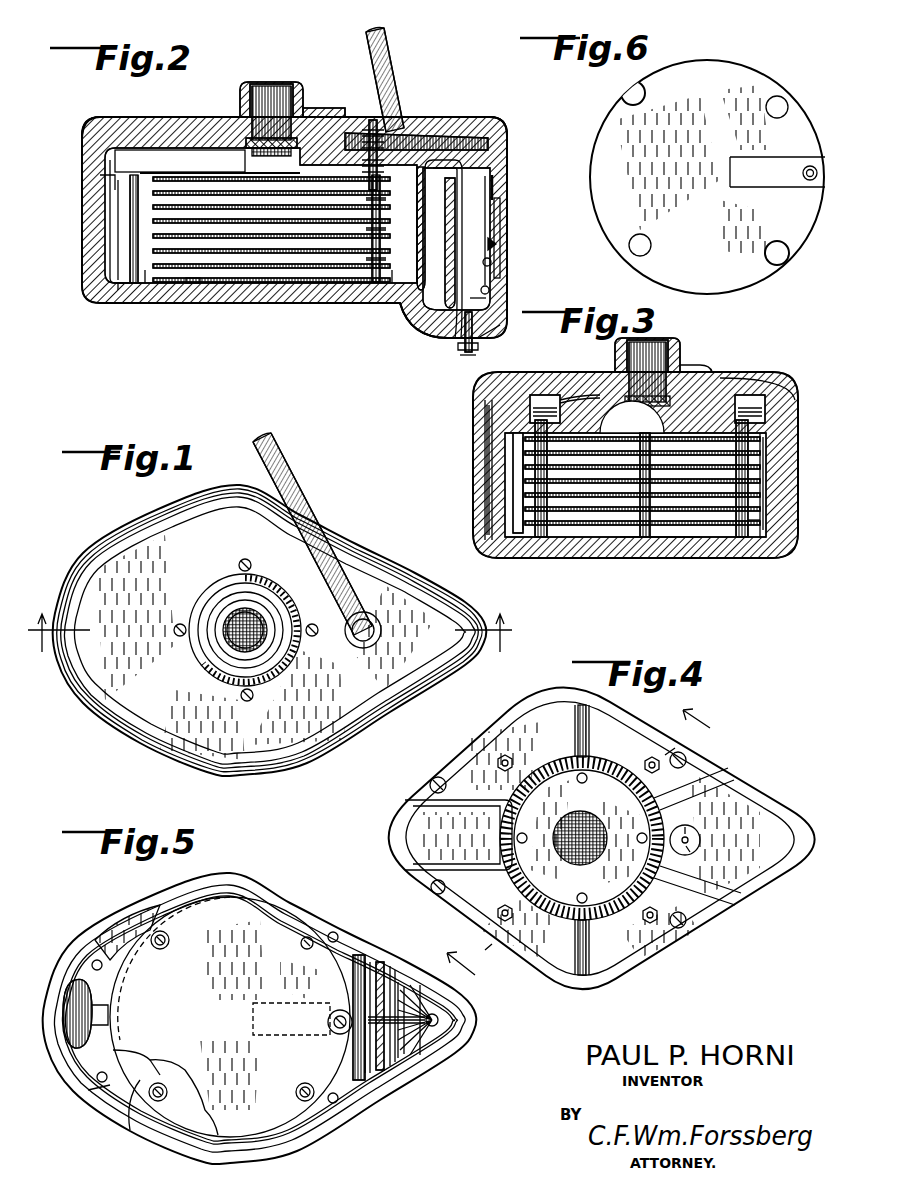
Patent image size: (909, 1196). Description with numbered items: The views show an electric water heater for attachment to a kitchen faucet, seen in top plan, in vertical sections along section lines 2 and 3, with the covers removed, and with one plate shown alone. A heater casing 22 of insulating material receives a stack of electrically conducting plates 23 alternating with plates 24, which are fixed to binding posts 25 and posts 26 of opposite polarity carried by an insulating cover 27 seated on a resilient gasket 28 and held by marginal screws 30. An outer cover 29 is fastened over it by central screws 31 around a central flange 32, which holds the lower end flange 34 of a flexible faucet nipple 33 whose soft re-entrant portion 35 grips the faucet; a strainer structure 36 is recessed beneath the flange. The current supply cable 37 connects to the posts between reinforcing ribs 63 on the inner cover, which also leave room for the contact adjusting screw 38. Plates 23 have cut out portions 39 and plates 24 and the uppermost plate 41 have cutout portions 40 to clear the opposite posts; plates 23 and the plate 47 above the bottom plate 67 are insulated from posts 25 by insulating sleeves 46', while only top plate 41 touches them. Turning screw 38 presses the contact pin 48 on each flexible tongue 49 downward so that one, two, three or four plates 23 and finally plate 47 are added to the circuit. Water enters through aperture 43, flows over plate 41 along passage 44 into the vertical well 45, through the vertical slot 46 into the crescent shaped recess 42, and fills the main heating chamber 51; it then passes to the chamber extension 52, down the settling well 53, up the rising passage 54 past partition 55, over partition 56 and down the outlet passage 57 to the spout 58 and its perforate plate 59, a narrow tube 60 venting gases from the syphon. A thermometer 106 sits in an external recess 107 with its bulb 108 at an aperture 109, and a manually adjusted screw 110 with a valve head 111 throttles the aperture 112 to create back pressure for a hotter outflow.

In FIG. 1, the section line 2— 2 is at (271, 646).
In FIG. 4, the section line 3— 3 is at (585, 851).
In FIG. 2, the heater casing 22 is at (259, 309).
In FIG. 3, the heater casing 22 is at (752, 566).
In FIG. 4, the heater casing 22 is at (755, 916).
In FIG. 5, the heater casing 22 is at (266, 866).
In FIG. 2, the electrically conducting plates 23 is at (153, 222).
In FIG. 6, the electrically conducting plates 23 is at (606, 218).
In FIG. 3, the electrically conducting plates 23 is at (775, 482).
In FIG. 2, the alternate plates 24 is at (134, 238).
In FIG. 3, the alternate plates 24 is at (513, 484).
In FIG. 5, the alternate plates 24 is at (165, 1092).
In FIG. 3, the binding posts 25 is at (542, 395).
In FIG. 4, the binding posts 25 is at (650, 760).
In FIG. 5, the binding posts 25 is at (300, 943).
In FIG. 2, the binding posts 26 is at (192, 284).
In FIG. 3, the binding posts 26 is at (608, 540).
In FIG. 4, the binding posts 26 is at (512, 759).
In FIG. 5, the binding posts 26 is at (169, 940).
In FIG. 2, the insulating cover 27 is at (503, 156).
In FIG. 3, the insulating cover 27 is at (480, 416).
In FIG. 4, the insulating cover 27 is at (600, 839).
In FIG. 2, the resilient gasket 28 is at (104, 183).
In FIG. 5, the resilient gasket 28 is at (100, 945).
In FIG. 2, the outer cover 29 is at (100, 124).
In FIG. 3, the outer cover 29 is at (790, 392).
In FIG. 1, the outer cover 29 is at (322, 742).
In FIG. 4, the marginal screws 30 is at (434, 778).
In FIG. 5, the marginal screws 30 is at (338, 932).
In FIG. 1, the central screws 31 is at (247, 560).
In FIG. 1, the central flange 32 is at (272, 596).
In FIG. 2, the flexible faucet nipple 33 is at (244, 90).
In FIG. 3, the flexible faucet nipple 33 is at (681, 355).
In FIG. 1, the flexible faucet nipple 33 is at (236, 598).
In FIG. 2, the lower end flange 34 is at (318, 110).
In FIG. 3, the lower end flange 34 is at (708, 374).
In FIG. 2, the re-entrant portion 35 is at (272, 92).
In FIG. 3, the re-entrant portion 35 is at (657, 350).
In FIG. 2, the strainer structure 36 is at (271, 160).
In FIG. 1, the strainer structure 36 is at (238, 648).
In FIG. 4, the strainer structure 36 is at (598, 845).
In FIG. 2, the current supply cable 37 is at (392, 84).
In FIG. 1, the current supply cable 37 is at (308, 492).
In FIG. 2, the contact adjusting screw 38 is at (371, 120).
In FIG. 4, the contact adjusting screw 38 is at (700, 832).
In FIG. 5, the contact adjusting screw 38 is at (327, 1022).
In FIG. 6, the cut out portions 39 is at (633, 82).
In FIG. 5, the cutout portions 40 is at (150, 1115).
In FIG. 3, the uppermost plate 41 is at (486, 462).
In FIG. 4, the uppermost plate 41 is at (458, 835).
In FIG. 5, the uppermost plate 41 is at (230, 1017).
In FIG. 2, the crescent shaped recess 42 is at (150, 284).
In FIG. 3, the crescent shaped recess 42 is at (521, 540).
In FIG. 5, the crescent shaped recess 42 is at (108, 1090).
In FIG. 2, the aperture 43 is at (256, 150).
In FIG. 3, the aperture 43 is at (658, 406).
In FIG. 2, the passage 44 is at (180, 161).
In FIG. 3, the passage 44 is at (632, 417).
In FIG. 2, the vertical well 45 is at (118, 256).
In FIG. 5, the vertical well 45 is at (72, 1050).
In FIG. 2, the vertical slot 46 is at (112, 304).
In FIG. 5, the vertical slot 46 is at (121, 1011).
In FIG. 3, the insulating sleeves 46' is at (638, 486).
In FIG. 5, the insulating sleeves 46' is at (176, 1083).
In FIG. 3, the plate 47 is at (770, 522).
In FIG. 6, the contact pin 48 is at (808, 181).
In FIG. 6, the flexible tongue 49 is at (807, 165).
In FIG. 5, the flexible tongue 49 is at (268, 1036).
In FIG. 2, the main heating chamber 51 is at (142, 264).
In FIG. 3, the main heating chamber 51 is at (770, 455).
In FIG. 5, the main heating chamber 51 is at (268, 900).
In FIG. 2, the chamber extension 52 is at (382, 236).
In FIG. 5, the chamber extension 52 is at (350, 1066).
In FIG. 2, the settling well 53 is at (422, 318).
In FIG. 5, the settling well 53 is at (418, 1060).
In FIG. 2, the rising passage 54 is at (446, 240).
In FIG. 5, the rising passage 54 is at (400, 1058).
In FIG. 2, the partition 55 is at (446, 290).
In FIG. 5, the partition 55 is at (380, 962).
In FIG. 2, the partition 56 is at (456, 215).
In FIG. 5, the partition 56 is at (396, 972).
In FIG. 2, the outlet passage 57 is at (488, 194).
In FIG. 5, the outlet passage 57 is at (445, 1030).
In FIG. 2, the spout 58 is at (498, 325).
In FIG. 2, the perforate plate 59 is at (478, 343).
In FIG. 2, the narrow tube 60 is at (460, 336).
In FIG. 5, the narrow tube 60 is at (396, 1010).
In FIG. 2, the reinforcing ribs 63 is at (432, 136).
In FIG. 3, the reinforcing ribs 63 is at (570, 398).
In FIG. 4, the reinforcing ribs 63 is at (586, 742).
In FIG. 2, the bottom plate 67 is at (393, 284).
In FIG. 3, the bottom plate 67 is at (650, 555).
In FIG. 2, the thermometer 106 is at (502, 225).
In FIG. 2, the external recess 107 is at (497, 212).
In FIG. 2, the bulb 108 is at (497, 264).
In FIG. 2, the aperture 109 is at (500, 245).
In FIG. 2, the manually adjusted screw 110 is at (466, 355).
In FIG. 2, the valve head 111 is at (490, 300).
In FIG. 2, the aperture 112 is at (490, 290).
In FIG. 5, the aperture 112 is at (440, 1018).